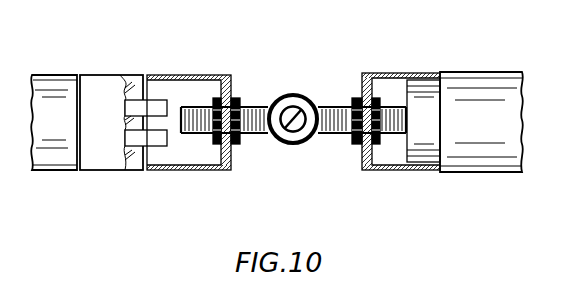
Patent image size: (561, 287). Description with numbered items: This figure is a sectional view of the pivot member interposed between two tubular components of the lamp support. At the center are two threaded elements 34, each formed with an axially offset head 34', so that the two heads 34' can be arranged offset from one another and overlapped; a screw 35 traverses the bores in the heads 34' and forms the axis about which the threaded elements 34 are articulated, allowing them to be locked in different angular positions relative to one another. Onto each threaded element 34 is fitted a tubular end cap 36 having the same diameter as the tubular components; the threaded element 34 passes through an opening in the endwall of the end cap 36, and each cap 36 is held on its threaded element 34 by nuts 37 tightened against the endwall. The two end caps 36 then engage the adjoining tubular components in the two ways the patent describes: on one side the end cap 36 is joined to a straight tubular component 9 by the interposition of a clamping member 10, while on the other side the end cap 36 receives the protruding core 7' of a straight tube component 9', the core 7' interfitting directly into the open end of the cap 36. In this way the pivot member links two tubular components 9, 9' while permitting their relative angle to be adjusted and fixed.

The straight tubular component 9 is at (53, 143).
The straight tube component 9' is at (481, 96).
The clamping member 10 is at (97, 157).
The protruding core 7' is at (423, 86).
The threaded element 34 is at (293, 144).
The axially offset head 34' is at (293, 148).
The screw 35 is at (293, 105).
The tubular end cap 36 is at (180, 75).
The nut 37 is at (240, 100).